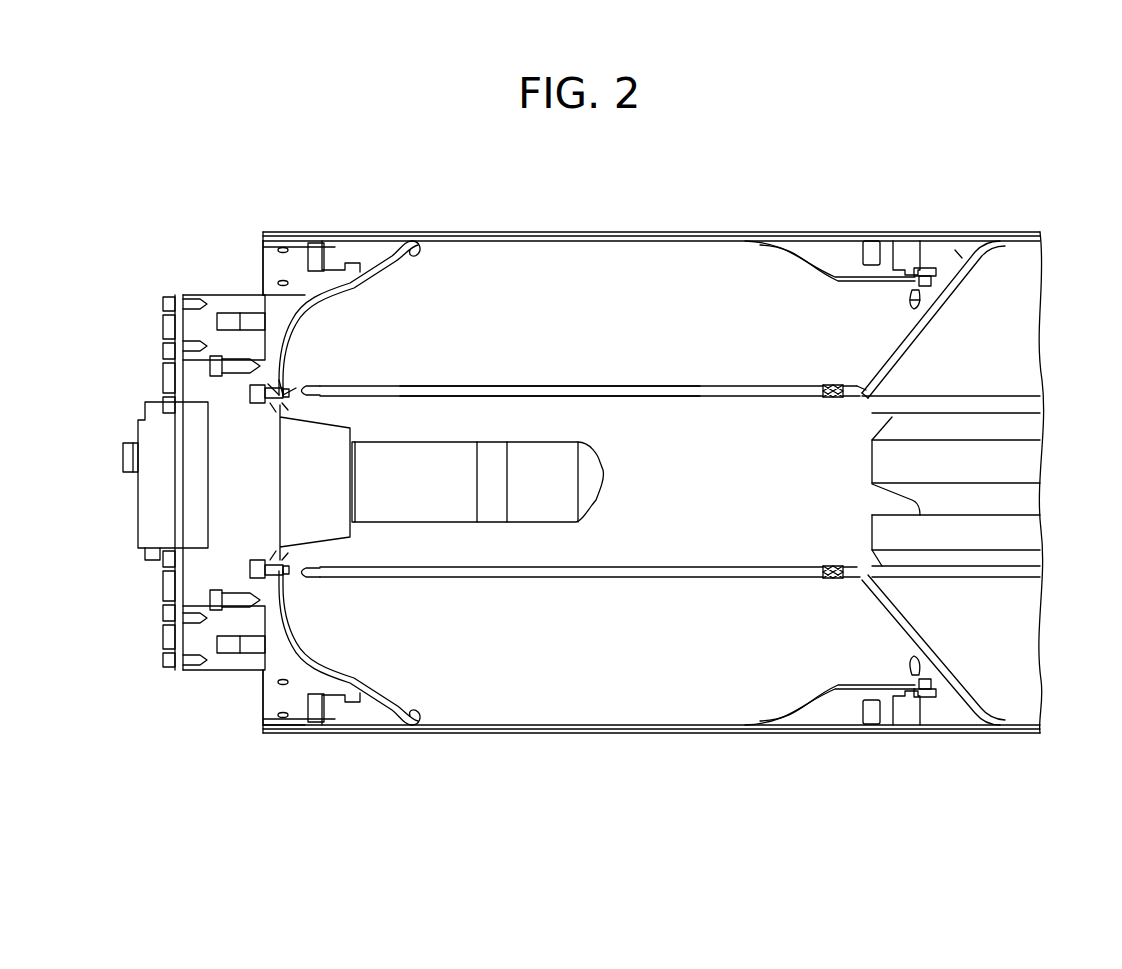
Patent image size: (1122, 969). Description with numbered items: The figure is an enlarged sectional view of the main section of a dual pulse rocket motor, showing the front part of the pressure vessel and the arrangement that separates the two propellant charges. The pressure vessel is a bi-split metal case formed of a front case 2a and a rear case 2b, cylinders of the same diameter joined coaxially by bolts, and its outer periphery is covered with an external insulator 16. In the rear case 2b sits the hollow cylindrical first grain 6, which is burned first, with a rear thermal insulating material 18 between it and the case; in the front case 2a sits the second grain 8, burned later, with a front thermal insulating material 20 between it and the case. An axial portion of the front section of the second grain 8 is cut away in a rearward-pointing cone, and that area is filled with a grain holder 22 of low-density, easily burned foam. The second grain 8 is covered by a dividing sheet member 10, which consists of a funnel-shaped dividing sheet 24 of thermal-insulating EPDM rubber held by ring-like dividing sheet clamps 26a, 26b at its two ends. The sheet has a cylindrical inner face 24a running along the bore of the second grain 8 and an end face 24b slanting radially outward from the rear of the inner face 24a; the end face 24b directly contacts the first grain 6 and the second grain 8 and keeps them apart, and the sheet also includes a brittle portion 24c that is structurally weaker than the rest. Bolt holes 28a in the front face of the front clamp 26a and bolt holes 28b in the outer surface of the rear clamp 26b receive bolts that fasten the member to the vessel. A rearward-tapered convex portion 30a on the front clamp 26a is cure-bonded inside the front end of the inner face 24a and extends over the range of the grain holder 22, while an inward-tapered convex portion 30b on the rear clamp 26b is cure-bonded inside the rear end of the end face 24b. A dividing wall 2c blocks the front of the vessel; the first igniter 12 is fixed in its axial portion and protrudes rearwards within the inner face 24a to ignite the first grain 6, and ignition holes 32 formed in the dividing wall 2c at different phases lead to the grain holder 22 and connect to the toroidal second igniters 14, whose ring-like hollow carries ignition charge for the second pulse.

The front case 2a is at (803, 240).
The rear case 2b is at (905, 247).
The dividing wall 2c is at (213, 350).
The first grain 6 is at (1000, 632).
The second grain 8 is at (491, 285).
The dividing sheet member 10 is at (686, 452).
The first igniter 12 is at (568, 500).
The second igniter 14 is at (234, 320).
The external insulator 16 is at (962, 235).
The rear thermal insulating material 18 is at (958, 255).
The front thermal insulating material 20 is at (421, 260).
The grain holder 22 is at (290, 372).
The dividing sheet 24 is at (740, 396).
The inner face 24a is at (520, 397).
The end face 24b is at (903, 340).
The brittle portion 24c is at (832, 400).
The dividing sheet clamp 26a is at (275, 405).
The dividing sheet clamp 26b is at (944, 285).
The bolt holes 28a is at (267, 398).
The bolt holes 28b is at (925, 265).
The convex portion 30a is at (302, 390).
The convex portion 30b is at (920, 298).
The ignition holes 32 is at (283, 385).